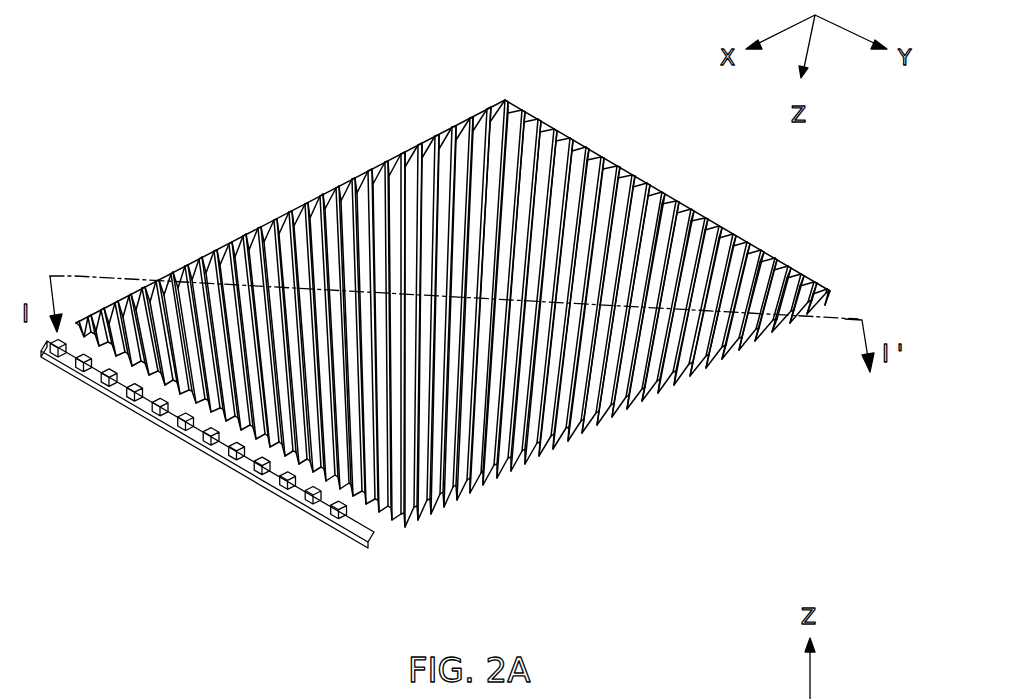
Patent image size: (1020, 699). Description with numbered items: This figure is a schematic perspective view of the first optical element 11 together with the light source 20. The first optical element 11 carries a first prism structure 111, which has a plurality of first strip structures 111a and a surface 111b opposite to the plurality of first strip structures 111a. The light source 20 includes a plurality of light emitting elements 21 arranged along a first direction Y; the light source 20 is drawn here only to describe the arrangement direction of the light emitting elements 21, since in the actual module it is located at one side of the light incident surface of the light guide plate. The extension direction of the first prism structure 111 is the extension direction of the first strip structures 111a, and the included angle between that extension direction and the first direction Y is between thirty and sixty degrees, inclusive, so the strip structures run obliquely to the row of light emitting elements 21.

The first optical element 11 is at (453, 273).
The first prism structure 111 is at (453, 313).
The first strip structures 111a is at (715, 357).
The surface 111b is at (360, 190).
The light source 20 is at (210, 481).
The light emitting elements 21 is at (364, 546).